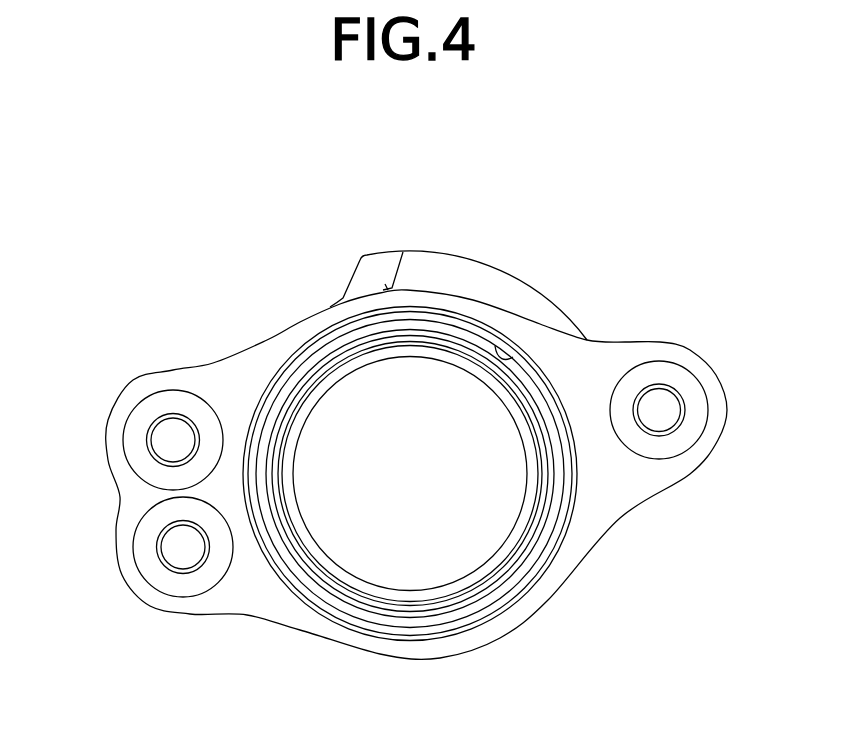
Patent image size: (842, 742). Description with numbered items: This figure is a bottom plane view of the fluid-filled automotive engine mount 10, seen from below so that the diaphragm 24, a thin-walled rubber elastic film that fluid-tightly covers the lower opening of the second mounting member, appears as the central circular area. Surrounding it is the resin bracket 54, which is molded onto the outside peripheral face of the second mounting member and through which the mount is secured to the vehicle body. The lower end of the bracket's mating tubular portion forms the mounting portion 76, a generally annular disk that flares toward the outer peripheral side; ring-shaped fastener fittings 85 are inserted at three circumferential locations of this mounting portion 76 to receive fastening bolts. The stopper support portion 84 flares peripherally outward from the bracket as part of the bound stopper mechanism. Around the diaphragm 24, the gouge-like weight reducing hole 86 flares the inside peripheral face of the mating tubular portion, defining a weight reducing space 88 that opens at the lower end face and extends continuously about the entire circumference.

The engine mount 10 is at (240, 268).
The diaphragm 24 is at (390, 560).
The resin bracket 54 is at (265, 628).
The mounting portion 76 is at (218, 380).
The stopper support portion 84 is at (455, 273).
The fastener fittings 85 is at (140, 433).
The weight reducing hole 86 is at (510, 360).
The weight reducing space 88 is at (512, 583).